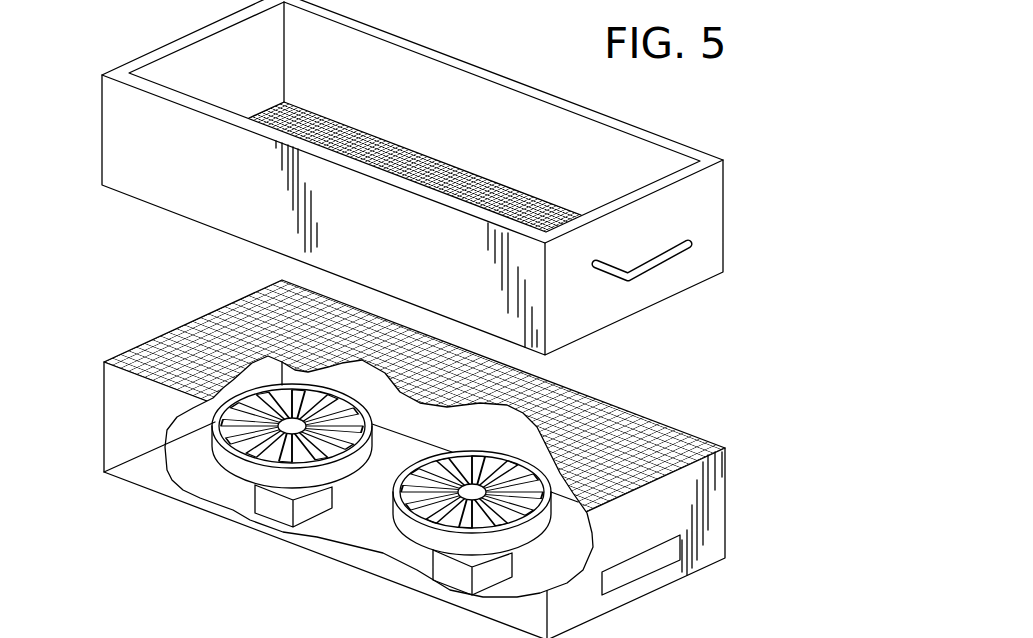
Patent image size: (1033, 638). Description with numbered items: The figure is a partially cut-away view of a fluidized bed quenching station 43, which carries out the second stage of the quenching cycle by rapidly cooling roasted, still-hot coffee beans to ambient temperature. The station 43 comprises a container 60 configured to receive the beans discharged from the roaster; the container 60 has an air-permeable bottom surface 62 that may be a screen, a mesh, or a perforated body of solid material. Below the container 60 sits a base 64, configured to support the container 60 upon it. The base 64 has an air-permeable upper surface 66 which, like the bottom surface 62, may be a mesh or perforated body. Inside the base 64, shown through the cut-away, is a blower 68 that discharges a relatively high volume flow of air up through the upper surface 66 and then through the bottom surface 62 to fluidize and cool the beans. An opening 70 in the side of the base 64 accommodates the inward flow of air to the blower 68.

The fluidized bed quenching station 43 is at (95, 30).
The container 60 is at (444, 177).
The bottom surface 62 is at (337, 131).
The base 64 is at (450, 459).
The upper surface 66 is at (658, 437).
The blower 68 is at (325, 500).
The opening 70 is at (633, 570).